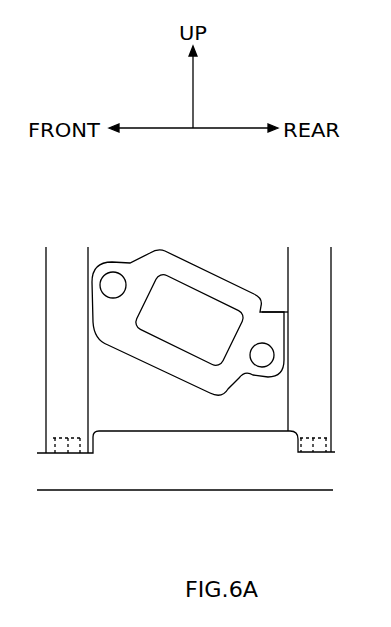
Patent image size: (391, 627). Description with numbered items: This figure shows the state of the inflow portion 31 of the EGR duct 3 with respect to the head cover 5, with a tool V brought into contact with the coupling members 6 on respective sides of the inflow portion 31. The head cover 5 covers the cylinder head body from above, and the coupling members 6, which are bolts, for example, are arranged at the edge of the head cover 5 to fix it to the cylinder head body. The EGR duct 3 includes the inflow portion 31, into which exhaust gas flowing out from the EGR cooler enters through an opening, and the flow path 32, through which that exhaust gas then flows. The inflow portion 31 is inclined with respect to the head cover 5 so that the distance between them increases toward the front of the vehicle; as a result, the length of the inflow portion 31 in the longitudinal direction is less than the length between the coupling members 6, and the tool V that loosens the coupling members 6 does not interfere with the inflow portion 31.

The EGR duct 3 is at (190, 291).
The inflow portion 31 is at (164, 263).
The flow path 32 is at (198, 290).
The head cover 5 is at (122, 460).
The coupling member 6 is at (56, 446).
The tool V is at (66, 271).